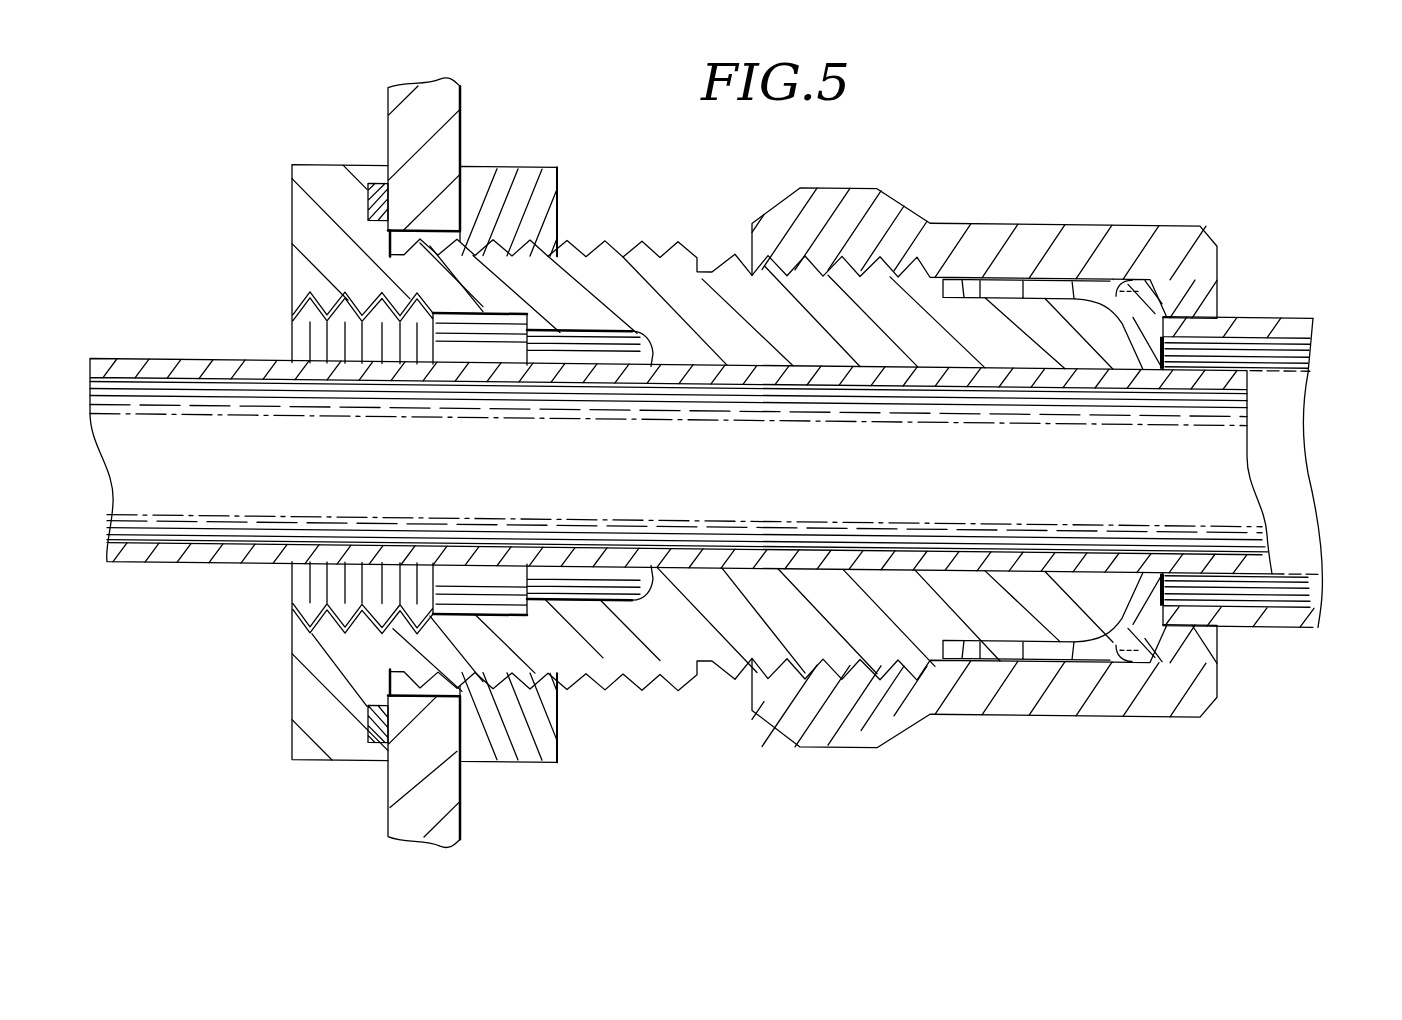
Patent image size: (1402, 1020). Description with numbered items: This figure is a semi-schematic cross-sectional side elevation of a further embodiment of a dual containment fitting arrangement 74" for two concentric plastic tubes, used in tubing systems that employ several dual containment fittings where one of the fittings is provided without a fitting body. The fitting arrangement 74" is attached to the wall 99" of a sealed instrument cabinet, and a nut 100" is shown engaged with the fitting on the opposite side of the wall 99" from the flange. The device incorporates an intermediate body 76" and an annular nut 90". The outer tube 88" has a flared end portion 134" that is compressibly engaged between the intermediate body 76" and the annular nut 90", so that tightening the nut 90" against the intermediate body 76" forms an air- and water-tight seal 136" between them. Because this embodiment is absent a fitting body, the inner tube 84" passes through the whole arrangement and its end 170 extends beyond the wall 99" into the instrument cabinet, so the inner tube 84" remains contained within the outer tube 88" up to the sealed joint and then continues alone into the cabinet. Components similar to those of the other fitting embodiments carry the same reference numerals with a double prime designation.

The end of the inner tube 170 is at (219, 361).
The inner tube 84 is at (700, 410).
The fitting arrangement 74 is at (270, 153).
The wall 99 is at (462, 122).
The lock nut 100 is at (525, 166).
The intermediate body 76 is at (880, 337).
The nut 90 is at (1055, 217).
The seal 136 is at (1147, 319).
The flared end portion 134 is at (1131, 600).
The outer tube 88 is at (1260, 327).